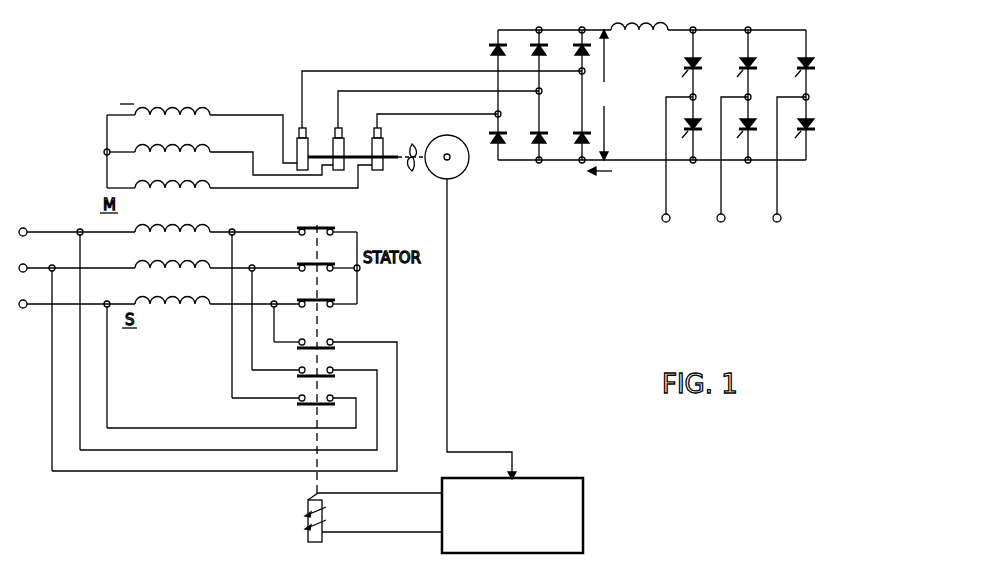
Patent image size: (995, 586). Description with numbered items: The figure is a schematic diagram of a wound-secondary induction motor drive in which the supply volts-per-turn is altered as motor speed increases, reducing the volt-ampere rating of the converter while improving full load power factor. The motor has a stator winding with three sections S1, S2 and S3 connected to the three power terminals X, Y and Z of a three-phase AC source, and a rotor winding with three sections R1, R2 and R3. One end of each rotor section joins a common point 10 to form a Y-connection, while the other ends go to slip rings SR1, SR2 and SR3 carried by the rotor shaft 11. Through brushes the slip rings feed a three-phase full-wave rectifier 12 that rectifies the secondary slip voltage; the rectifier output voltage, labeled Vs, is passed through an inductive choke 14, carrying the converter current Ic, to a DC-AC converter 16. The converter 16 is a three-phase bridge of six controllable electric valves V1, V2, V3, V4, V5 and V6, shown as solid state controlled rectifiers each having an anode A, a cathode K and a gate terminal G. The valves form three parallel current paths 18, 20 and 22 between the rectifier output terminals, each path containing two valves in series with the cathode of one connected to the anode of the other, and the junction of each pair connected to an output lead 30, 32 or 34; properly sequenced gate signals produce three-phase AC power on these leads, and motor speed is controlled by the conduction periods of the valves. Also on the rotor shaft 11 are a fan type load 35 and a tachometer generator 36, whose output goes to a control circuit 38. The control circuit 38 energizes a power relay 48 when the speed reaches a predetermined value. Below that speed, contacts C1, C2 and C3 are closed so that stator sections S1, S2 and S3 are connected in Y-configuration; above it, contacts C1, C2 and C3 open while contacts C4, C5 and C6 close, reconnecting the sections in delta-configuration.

The common point 10 is at (107, 176).
The rotor shaft 11 is at (398, 152).
The three-phase full-wave rectifier 12 is at (496, 37).
The inductive choke 14 is at (660, 26).
The DC-AC converter 16 is at (806, 28).
The current path 18 is at (691, 46).
The current path 20 is at (746, 45).
The current path 22 is at (808, 47).
The AC line 30 is at (664, 193).
The AC line 32 is at (719, 193).
The AC line 34 is at (775, 193).
The fan type load 35 is at (413, 144).
The tachometer generator 36 is at (467, 170).
The control circuit 38 is at (585, 522).
The power relay 48 is at (308, 512).
The rotor winding section R1 is at (172, 112).
The rotor winding section R2 is at (172, 149).
The rotor winding section R3 is at (172, 185).
The stator winding section S1 is at (173, 230).
The stator winding section S2 is at (172, 266).
The stator winding section S3 is at (172, 302).
The slip ring SR1 is at (302, 172).
The slip ring SR2 is at (338, 172).
The slip ring SR3 is at (377, 172).
The contact C1 is at (297, 231).
The contact C2 is at (297, 267).
The contact C3 is at (297, 303).
The contact C4 is at (300, 348).
The contact C5 is at (300, 376).
The contact C6 is at (300, 404).
The controllable electric valve V1 is at (683, 63).
The controllable electric valve V2 is at (816, 124).
The controllable electric valve V3 is at (754, 57).
The controllable electric valve V4 is at (700, 119).
The controllable electric valve V5 is at (798, 57).
The controllable electric valve V6 is at (755, 119).
The power terminal X is at (58, 230).
The power terminal Y is at (44, 265).
The power terminal Z is at (43, 301).
The anode A is at (815, 59).
The cathode K is at (818, 72).
The gate terminal G is at (800, 78).
The voltage Vs is at (602, 95).
The current Ic is at (608, 173).